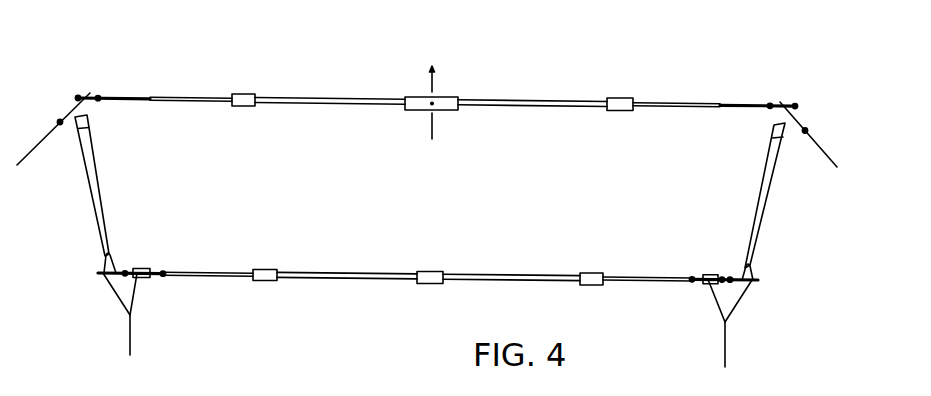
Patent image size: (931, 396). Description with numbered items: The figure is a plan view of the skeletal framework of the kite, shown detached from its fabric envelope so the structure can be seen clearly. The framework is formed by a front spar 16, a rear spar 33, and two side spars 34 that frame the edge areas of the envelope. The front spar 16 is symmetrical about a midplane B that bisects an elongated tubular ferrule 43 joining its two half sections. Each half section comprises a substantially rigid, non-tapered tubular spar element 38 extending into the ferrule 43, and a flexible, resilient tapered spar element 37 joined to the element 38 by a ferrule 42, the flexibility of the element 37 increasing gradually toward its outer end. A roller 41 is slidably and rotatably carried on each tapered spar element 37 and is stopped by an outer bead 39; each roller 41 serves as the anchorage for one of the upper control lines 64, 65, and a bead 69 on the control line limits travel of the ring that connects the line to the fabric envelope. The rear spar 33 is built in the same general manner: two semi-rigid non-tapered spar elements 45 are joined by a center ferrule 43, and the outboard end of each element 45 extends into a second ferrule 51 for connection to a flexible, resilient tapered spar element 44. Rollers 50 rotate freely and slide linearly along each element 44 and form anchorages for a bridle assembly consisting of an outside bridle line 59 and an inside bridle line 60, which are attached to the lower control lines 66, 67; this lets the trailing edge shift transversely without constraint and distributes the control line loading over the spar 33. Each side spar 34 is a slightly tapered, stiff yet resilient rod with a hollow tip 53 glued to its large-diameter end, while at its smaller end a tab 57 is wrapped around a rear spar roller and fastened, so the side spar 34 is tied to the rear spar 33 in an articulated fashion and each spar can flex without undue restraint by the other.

The front spar 16 is at (516, 100).
The rear spar 33 is at (326, 286).
The side spar 34 is at (93, 198).
The tapered spar element 37 is at (181, 104).
The non-tapered tubular spar element 38 is at (317, 106).
The outer bead 39 is at (78, 96).
The roller 41 is at (99, 96).
The ferrule 42 is at (240, 94).
The ferrule 43 is at (450, 111).
The tapered spar element 44 is at (219, 283).
The spar element 45 is at (333, 275).
The roller 50 is at (145, 270).
The ferrule 51 is at (265, 272).
The hollow tip 53 is at (87, 119).
The tab 57 is at (108, 283).
The outside bridle line 59 is at (117, 302).
The inside bridle line 60 is at (136, 300).
The upper control line 64 is at (31, 152).
The upper control line 65 is at (825, 154).
The lower control line 66 is at (130, 343).
The lower control line 67 is at (726, 352).
The bead 69 is at (59, 119).
The midplane B is at (430, 128).